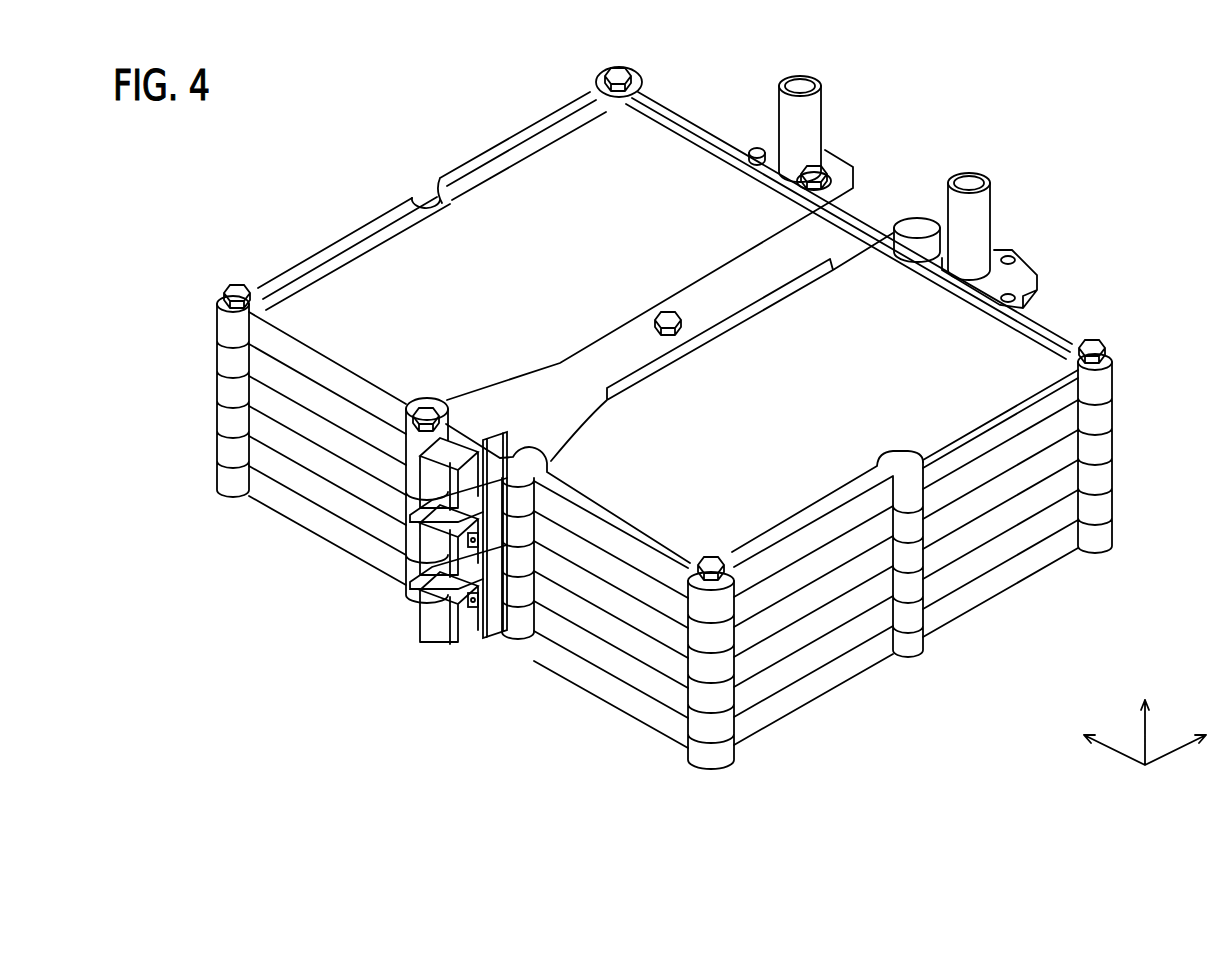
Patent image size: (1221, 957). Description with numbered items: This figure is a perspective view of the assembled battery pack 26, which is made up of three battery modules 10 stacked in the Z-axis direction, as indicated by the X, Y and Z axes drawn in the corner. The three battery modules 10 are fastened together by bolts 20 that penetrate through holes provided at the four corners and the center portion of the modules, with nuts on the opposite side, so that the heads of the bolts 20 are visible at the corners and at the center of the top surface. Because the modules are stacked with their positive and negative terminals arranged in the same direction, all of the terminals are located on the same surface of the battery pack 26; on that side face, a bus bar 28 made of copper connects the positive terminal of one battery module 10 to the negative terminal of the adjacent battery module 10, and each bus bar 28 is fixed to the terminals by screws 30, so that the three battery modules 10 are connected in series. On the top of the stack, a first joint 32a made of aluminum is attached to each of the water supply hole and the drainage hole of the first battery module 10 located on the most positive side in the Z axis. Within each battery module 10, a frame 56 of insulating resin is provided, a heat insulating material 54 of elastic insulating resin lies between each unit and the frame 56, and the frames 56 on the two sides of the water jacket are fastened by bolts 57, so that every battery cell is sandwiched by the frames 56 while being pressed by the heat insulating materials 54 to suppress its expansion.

The battery module 10 is at (707, 532).
The bolt 20 is at (612, 72).
The battery pack 26 is at (1128, 91).
The bus bar 28 is at (437, 512).
The screw 30 is at (466, 545).
The first joint 32a is at (822, 90).
The heat insulating material 54 is at (378, 268).
The frame 56 is at (980, 473).
The bolt 57 is at (830, 172).